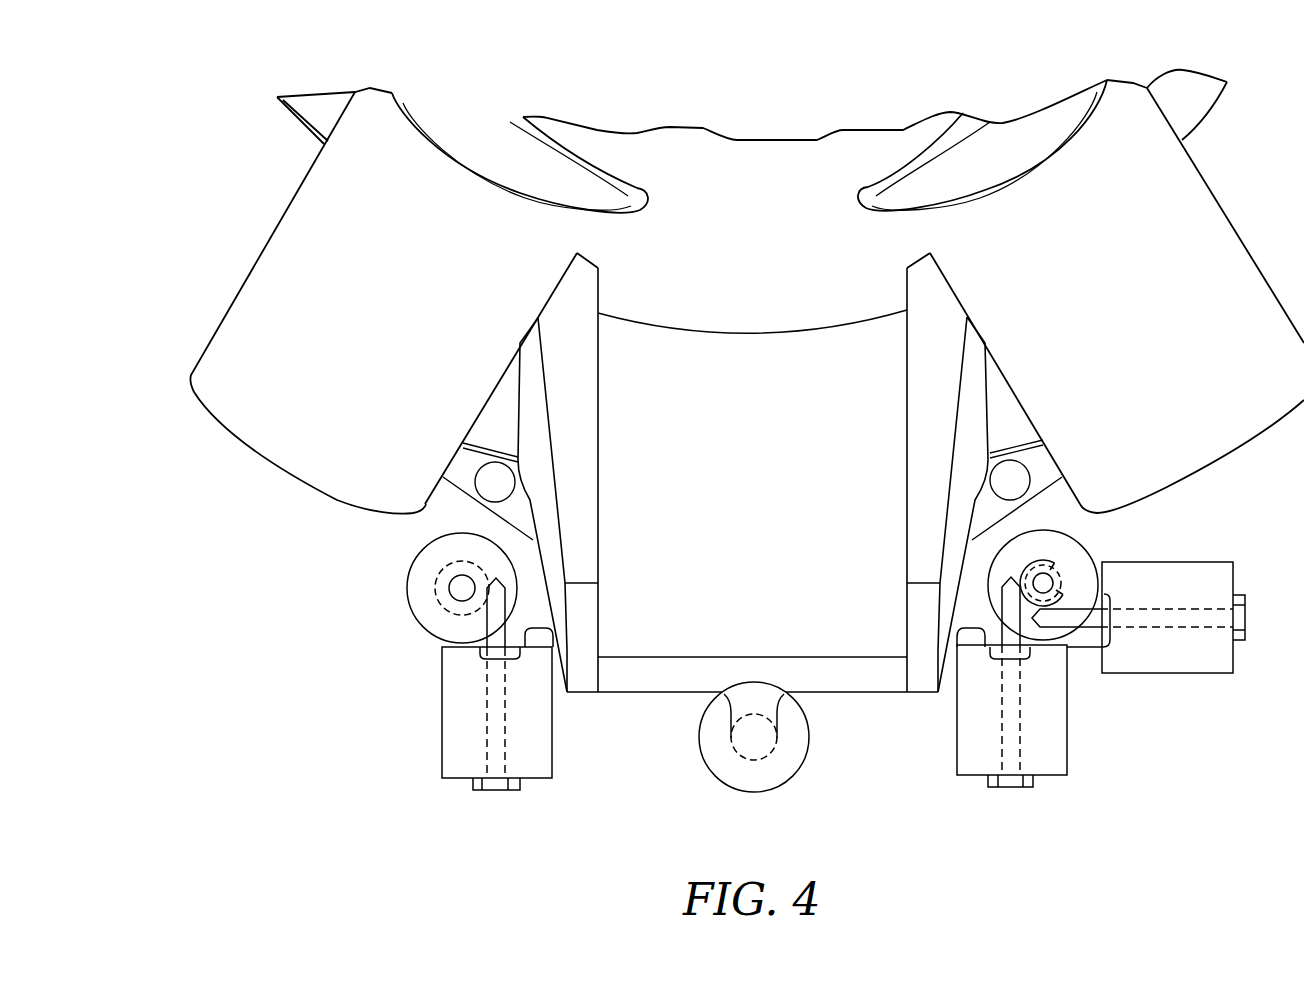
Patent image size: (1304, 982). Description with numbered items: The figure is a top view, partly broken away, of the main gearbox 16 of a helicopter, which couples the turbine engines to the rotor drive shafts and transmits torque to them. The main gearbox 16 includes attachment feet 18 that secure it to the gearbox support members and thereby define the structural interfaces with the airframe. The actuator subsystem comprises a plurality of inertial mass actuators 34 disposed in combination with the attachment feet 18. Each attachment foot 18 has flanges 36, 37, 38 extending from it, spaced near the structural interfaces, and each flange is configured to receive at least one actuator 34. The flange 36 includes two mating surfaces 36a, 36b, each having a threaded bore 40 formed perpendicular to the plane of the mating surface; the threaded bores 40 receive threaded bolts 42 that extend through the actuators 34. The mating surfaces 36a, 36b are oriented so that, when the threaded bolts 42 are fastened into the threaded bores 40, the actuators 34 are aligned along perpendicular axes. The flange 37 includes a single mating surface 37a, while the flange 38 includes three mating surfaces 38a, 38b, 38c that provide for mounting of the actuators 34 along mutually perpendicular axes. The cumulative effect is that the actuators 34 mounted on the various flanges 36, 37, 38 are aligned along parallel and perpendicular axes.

The main gearbox 16 is at (268, 177).
The attachment feet 18 is at (728, 497).
The inertial mass actuators 34 is at (810, 651).
The flange 36 is at (434, 619).
The mating surface 36a is at (494, 655).
The mating surface 36b is at (435, 591).
The flange 37 is at (739, 751).
The mating surface 37a is at (763, 748).
The flange 38 is at (1089, 647).
The mating surface 38a is at (1010, 660).
The mating surface 38b is at (1060, 568).
The mating surface 38c is at (1115, 626).
The threaded bore 40 is at (485, 627).
The threaded bolts 42 is at (492, 720).